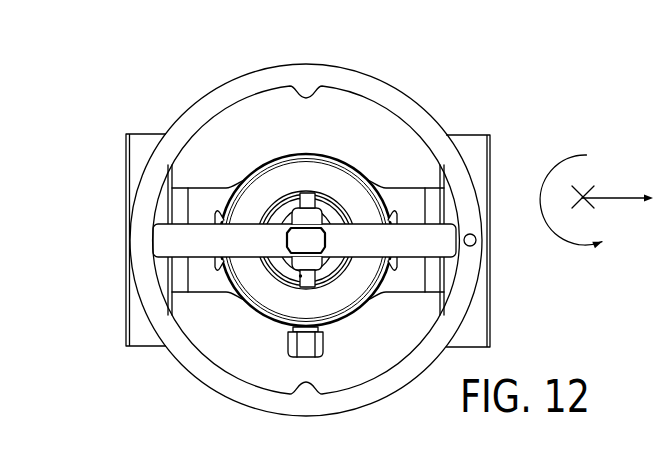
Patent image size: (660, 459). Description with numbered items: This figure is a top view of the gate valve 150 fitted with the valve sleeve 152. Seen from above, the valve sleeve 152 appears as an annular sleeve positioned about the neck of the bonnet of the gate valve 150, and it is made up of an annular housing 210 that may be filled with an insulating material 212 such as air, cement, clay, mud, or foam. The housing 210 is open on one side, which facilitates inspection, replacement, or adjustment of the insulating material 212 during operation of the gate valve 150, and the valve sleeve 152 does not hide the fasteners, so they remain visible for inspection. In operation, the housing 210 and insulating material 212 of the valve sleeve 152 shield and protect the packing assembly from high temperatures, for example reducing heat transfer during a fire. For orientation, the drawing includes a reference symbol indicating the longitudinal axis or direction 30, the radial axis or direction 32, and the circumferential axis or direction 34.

The gate valve 150 is at (456, 80).
The valve sleeve 152 is at (304, 189).
The housing 210 is at (358, 171).
The insulating material 212 is at (273, 183).
The longitudinal axis or direction 30 is at (540, 198).
The radial axis or direction 32 is at (614, 198).
The circumferential axis or direction 34 is at (577, 206).